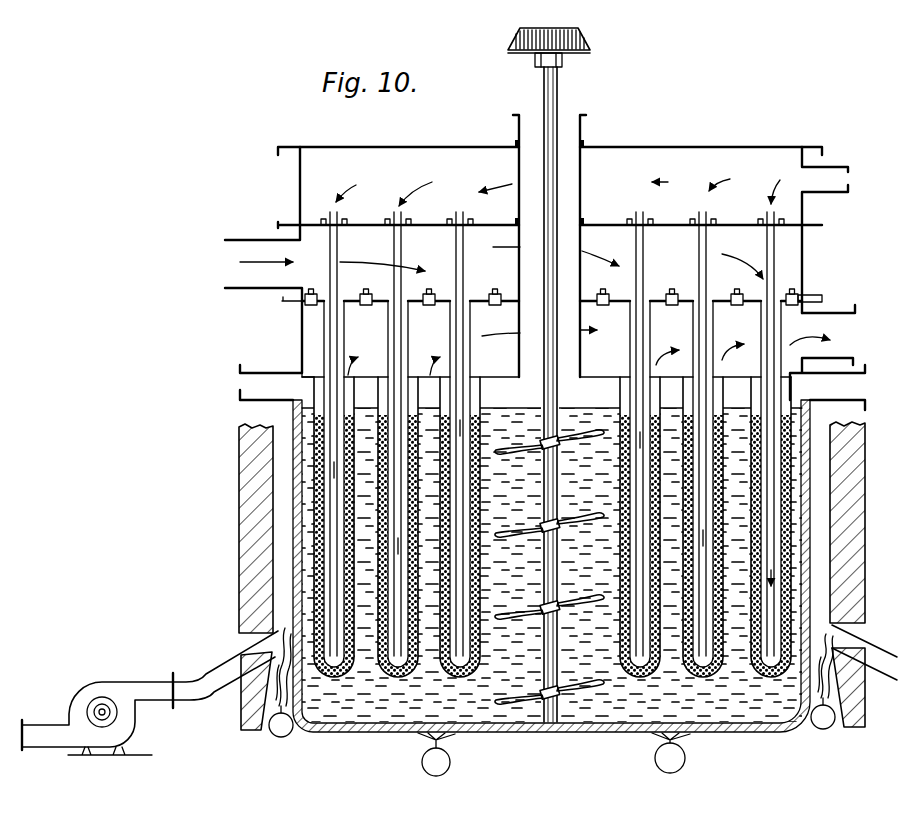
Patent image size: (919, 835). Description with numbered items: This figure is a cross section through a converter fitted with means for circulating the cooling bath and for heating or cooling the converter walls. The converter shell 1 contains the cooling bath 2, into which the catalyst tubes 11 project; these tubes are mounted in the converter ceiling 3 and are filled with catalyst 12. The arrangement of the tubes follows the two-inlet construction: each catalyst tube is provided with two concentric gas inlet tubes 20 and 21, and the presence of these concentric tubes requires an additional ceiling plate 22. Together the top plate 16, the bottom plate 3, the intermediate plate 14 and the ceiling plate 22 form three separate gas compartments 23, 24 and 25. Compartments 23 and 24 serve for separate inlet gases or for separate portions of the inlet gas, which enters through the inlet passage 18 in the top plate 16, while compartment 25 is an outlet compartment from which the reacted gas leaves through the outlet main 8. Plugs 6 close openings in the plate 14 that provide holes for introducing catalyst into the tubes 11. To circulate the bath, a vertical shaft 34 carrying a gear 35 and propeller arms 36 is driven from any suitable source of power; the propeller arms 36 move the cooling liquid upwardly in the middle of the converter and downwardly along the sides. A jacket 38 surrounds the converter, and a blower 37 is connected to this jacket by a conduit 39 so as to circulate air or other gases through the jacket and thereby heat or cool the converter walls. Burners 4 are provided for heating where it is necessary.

The converter shell 1 is at (363, 732).
The cooling bath 2 is at (517, 717).
The converter ceiling 3 is at (306, 373).
The burners 4 is at (280, 737).
The plugs 6 is at (368, 305).
The outlet main 8 is at (829, 365).
The catalyst tubes 11 is at (481, 395).
The catalyst 12 is at (300, 443).
The intermediate plate 14 is at (378, 298).
The top plate 16 is at (344, 146).
The inlet passage 18 is at (828, 181).
The gas inlet tube 20 is at (450, 327).
The gas inlet tube 21 is at (393, 239).
The ceiling plate 22 is at (308, 224).
The gas compartment 23 is at (300, 171).
The gas compartment 24 is at (797, 250).
The outlet compartment 25 is at (302, 323).
The vertical shaft 34 is at (558, 84).
The gear 35 is at (590, 45).
The propeller arms 36 is at (582, 440).
The blower 37 is at (93, 680).
The jacket 38 is at (278, 577).
The conduit 39 is at (198, 672).